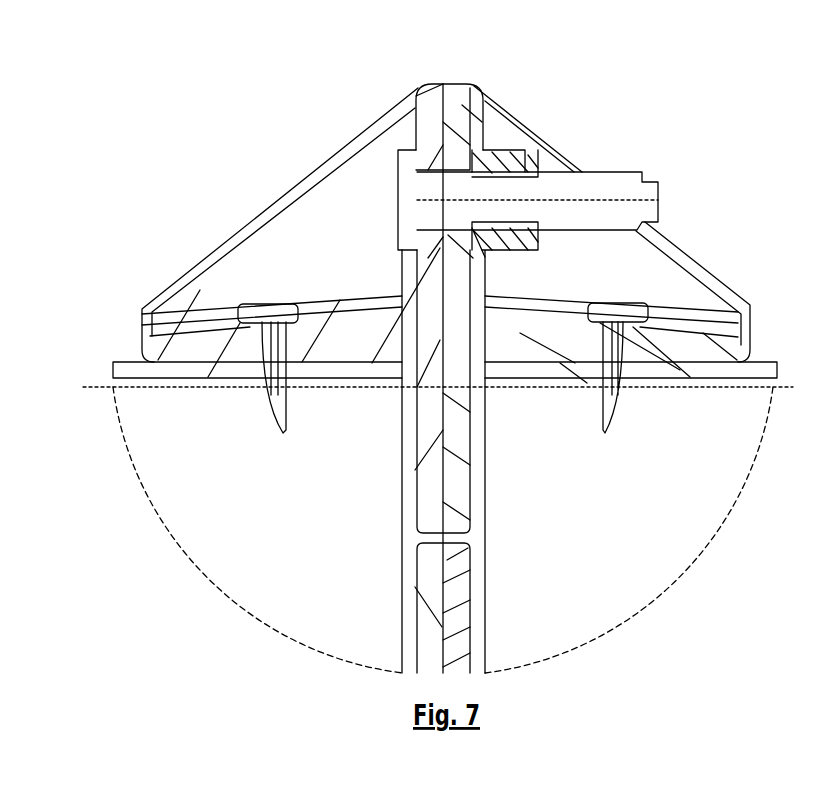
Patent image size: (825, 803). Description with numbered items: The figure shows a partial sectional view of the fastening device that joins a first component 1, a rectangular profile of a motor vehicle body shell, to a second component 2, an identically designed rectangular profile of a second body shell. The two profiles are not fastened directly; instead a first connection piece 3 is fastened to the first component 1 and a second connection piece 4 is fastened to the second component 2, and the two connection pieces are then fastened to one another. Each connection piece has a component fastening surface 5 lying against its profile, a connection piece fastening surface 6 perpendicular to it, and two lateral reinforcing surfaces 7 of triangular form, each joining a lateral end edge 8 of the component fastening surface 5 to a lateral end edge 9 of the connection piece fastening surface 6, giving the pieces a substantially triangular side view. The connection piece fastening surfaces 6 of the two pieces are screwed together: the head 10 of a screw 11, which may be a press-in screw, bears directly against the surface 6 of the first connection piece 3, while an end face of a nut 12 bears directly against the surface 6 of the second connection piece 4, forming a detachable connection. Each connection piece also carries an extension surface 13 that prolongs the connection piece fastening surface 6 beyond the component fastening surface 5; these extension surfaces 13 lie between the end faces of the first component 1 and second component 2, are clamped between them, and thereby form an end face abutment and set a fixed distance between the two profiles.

The first component 1 is at (128, 372).
The second component 2 is at (748, 370).
The first connection piece 3 is at (247, 247).
The second connection piece 4 is at (652, 268).
The component fastening surface 5 is at (678, 343).
The connection piece fastening surface 6 is at (455, 118).
The lateral reinforcing surface 7 is at (450, 225).
The lateral end edge of the component fastening surface 8 is at (178, 347).
The lateral end edge of the connection piece fastening surface 9 is at (428, 127).
The head 10 is at (395, 200).
The screw 11 is at (598, 185).
The nut 12 is at (503, 157).
The extension surface 13 is at (432, 468).